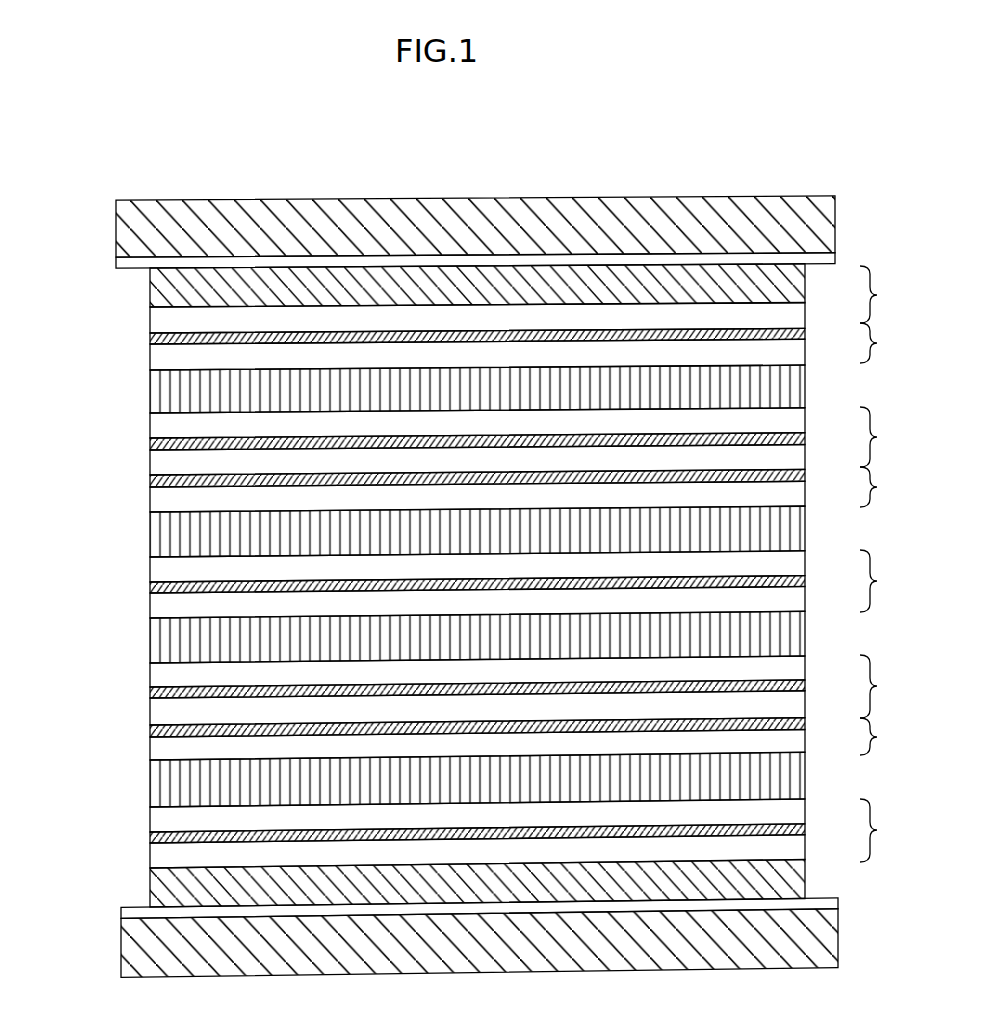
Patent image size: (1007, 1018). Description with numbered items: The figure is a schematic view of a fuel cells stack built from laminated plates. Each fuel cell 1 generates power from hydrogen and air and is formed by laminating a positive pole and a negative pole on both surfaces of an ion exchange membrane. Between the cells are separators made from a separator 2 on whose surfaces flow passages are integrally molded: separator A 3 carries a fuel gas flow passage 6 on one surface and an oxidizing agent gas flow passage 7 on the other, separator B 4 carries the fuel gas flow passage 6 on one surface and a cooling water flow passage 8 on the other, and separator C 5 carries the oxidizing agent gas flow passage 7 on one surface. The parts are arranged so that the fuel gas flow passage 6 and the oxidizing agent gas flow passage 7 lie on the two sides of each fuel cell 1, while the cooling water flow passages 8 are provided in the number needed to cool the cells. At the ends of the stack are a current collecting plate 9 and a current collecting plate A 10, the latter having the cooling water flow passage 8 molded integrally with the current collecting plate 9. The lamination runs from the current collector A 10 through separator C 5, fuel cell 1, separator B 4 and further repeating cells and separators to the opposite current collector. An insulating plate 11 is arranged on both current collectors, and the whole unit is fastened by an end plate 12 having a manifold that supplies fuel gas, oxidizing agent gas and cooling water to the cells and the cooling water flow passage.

The fuel cell 1 is at (793, 385).
The separator 2 is at (160, 340).
The separator A 3 is at (880, 581).
The separator B 4 is at (881, 634).
The separator C 5 is at (881, 540).
The fuel gas flow passage 6 is at (163, 425).
The oxidizing agent gas flow passage 7 is at (165, 356).
The cooling water flow passage 8 is at (165, 320).
The current collecting plate 9 is at (162, 298).
The current collecting plate A 10 is at (890, 294).
The insulating plate 11 is at (130, 262).
The end plate 12 is at (822, 221).